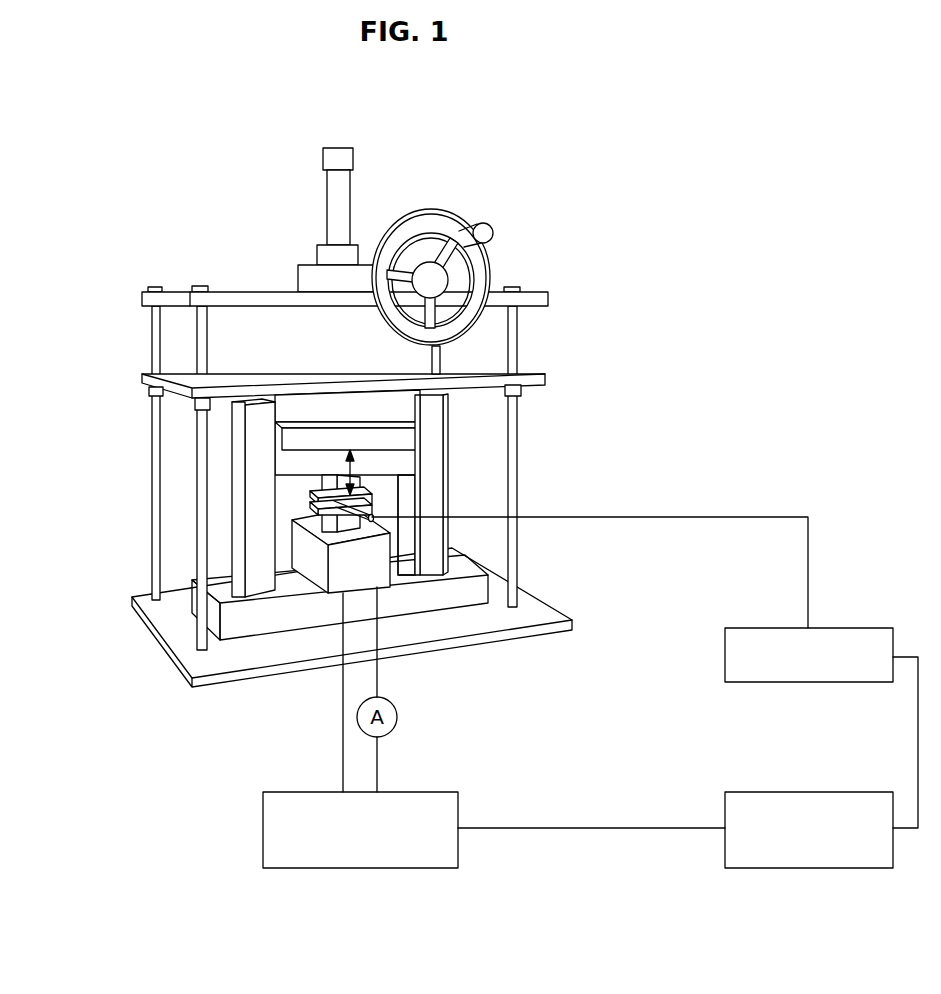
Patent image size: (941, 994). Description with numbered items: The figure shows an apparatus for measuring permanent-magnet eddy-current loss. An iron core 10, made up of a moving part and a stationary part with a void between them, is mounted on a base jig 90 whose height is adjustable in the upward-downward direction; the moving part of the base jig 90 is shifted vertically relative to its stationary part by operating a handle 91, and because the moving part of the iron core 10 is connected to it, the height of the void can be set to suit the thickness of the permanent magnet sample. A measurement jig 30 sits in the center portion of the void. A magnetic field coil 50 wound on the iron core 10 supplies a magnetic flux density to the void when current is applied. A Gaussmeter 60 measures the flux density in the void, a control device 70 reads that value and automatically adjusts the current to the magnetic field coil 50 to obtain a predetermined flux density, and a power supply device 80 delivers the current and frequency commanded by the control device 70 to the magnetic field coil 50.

The iron core 10 is at (433, 485).
The measurement jig 30 is at (310, 502).
The magnetic field coil 50 is at (305, 545).
The Gaussmeter 60 is at (861, 628).
The control device 70 is at (807, 868).
The power supply device 80 is at (353, 868).
The base jig 90 is at (240, 292).
The handle 91 is at (440, 223).